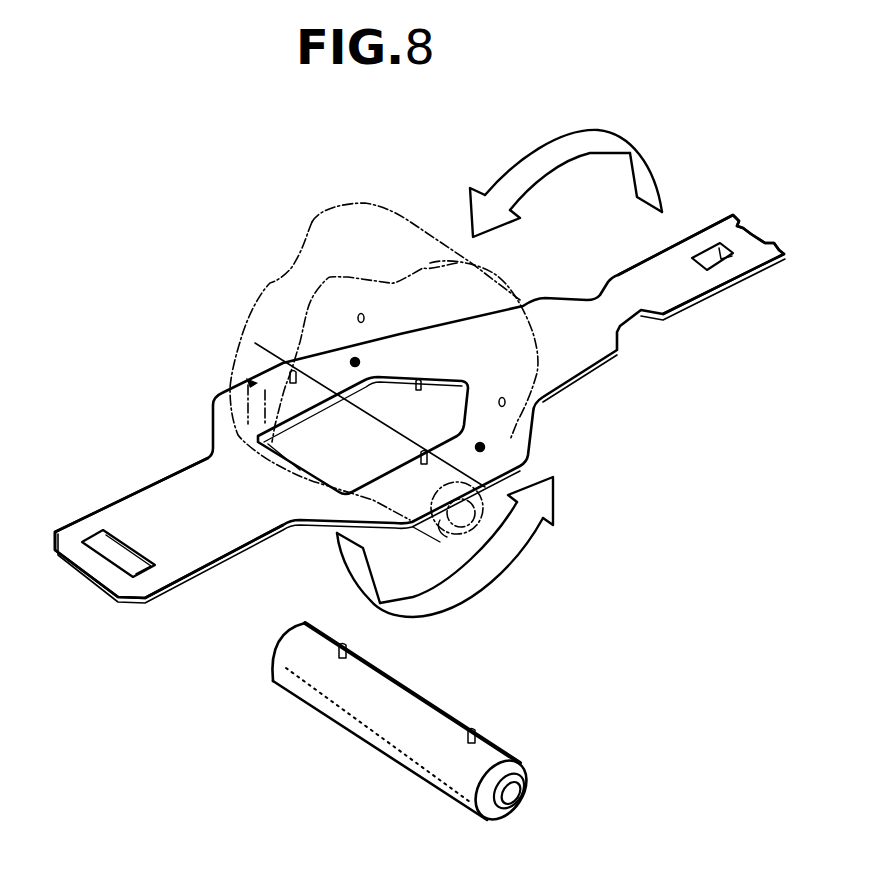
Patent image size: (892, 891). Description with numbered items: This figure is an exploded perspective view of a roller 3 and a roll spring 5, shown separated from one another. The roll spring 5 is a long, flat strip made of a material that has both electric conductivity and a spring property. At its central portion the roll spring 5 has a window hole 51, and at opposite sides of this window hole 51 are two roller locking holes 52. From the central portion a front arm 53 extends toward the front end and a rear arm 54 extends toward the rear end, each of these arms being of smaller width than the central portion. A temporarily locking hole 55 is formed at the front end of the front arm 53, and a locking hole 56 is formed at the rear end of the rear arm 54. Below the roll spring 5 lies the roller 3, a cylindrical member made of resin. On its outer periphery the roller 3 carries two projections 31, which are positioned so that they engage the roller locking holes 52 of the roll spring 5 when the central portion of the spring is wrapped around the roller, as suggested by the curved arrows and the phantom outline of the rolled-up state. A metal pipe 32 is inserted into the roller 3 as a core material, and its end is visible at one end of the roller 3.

The roller 3 is at (458, 701).
The projections 31 is at (346, 649).
The metal pipe 32 is at (527, 771).
The roll spring 5 is at (199, 424).
The window hole 51 is at (428, 379).
The roller locking holes 52 is at (357, 360).
The front arm 53 is at (85, 530).
The rear arm 54 is at (700, 232).
The temporarily locking hole 55 is at (118, 568).
The locking hole 56 is at (724, 262).